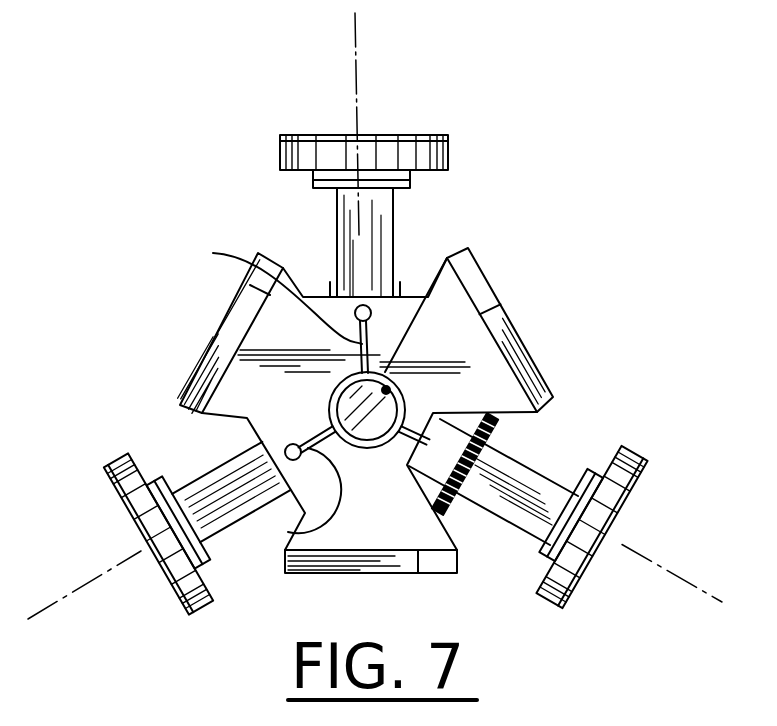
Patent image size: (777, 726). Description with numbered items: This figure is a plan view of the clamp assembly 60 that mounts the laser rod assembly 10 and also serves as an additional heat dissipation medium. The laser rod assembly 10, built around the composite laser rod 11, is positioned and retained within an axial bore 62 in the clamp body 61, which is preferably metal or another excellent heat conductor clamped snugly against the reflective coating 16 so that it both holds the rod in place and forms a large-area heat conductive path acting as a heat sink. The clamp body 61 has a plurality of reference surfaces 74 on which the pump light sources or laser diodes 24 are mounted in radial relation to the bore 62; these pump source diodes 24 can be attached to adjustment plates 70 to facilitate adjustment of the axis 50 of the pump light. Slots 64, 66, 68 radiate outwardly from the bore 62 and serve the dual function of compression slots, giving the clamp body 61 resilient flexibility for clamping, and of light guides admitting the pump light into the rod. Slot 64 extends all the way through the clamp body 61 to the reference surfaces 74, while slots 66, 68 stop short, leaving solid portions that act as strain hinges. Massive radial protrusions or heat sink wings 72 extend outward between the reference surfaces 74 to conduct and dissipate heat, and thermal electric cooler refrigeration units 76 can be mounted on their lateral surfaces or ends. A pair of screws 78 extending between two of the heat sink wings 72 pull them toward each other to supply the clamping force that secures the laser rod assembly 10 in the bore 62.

The laser rod assembly 10 is at (328, 400).
The composite laser rod 11 is at (325, 413).
The reflective coating 16 is at (392, 388).
The pump light sources 24 is at (393, 208).
The axis of the pump light 50 is at (357, 52).
The clamp assembly 60 is at (261, 243).
The clamp body 61 is at (408, 292).
The axial bore 62 is at (478, 272).
The slot 64 is at (405, 400).
The slot 66 is at (266, 291).
The slot 68 is at (292, 527).
The adjustment plates 70 is at (372, 136).
The heat sink wings 72 is at (257, 303).
The reference surfaces 74 is at (333, 288).
The thermal electric cooler refrigeration units 76 is at (214, 338).
The screws 78 is at (452, 513).